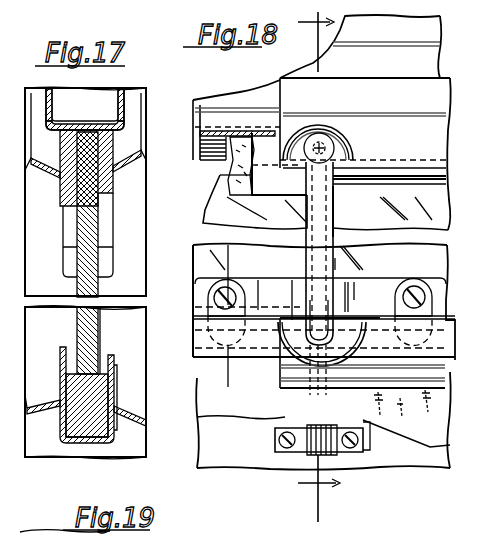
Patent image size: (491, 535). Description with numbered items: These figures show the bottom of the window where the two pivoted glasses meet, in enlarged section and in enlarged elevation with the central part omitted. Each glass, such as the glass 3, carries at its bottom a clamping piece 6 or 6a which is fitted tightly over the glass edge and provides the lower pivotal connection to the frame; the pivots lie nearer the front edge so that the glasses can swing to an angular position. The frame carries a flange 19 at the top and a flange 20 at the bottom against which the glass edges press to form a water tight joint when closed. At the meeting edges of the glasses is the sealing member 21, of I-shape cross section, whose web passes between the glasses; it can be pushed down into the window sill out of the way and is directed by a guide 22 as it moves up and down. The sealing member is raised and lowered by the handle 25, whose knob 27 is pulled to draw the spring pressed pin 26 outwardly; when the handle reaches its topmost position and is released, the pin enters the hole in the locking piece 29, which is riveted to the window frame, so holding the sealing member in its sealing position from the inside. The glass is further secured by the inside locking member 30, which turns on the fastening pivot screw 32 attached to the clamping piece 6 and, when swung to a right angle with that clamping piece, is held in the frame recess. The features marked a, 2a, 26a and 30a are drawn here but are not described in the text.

In FIG. 17, the bolt shaft a is at (100, 286).
In FIG. 18, the bolt shaft a is at (285, 223).
In FIG. 17, the clamping piece 6 is at (104, 358).
In FIG. 18, the clamping piece 6 is at (280, 299).
In FIG. 18, the clamping piece 6a is at (386, 299).
In FIG. 18, the flange 19 is at (302, 263).
In FIG. 18, the top plate 2a is at (296, 62).
In FIG. 18, the glass 3 is at (380, 269).
In FIG. 18, the locking piece 29 is at (311, 130).
In FIG. 18, the handle 25 is at (331, 136).
In FIG. 18, the knob 27 is at (334, 150).
In FIG. 18, the flange 20 is at (197, 333).
In FIG. 18, the sealing member 21 is at (330, 263).
In FIG. 18, the guide 22 is at (275, 443).
In FIG. 18, the spring pressed pin 26 is at (213, 379).
In FIG. 18, the slot center line 26a is at (213, 262).
In FIG. 18, the locking member 30 is at (200, 270).
In FIG. 18, the slot 30a is at (408, 283).
In FIG. 18, the fastening pivot screw 32 is at (212, 300).